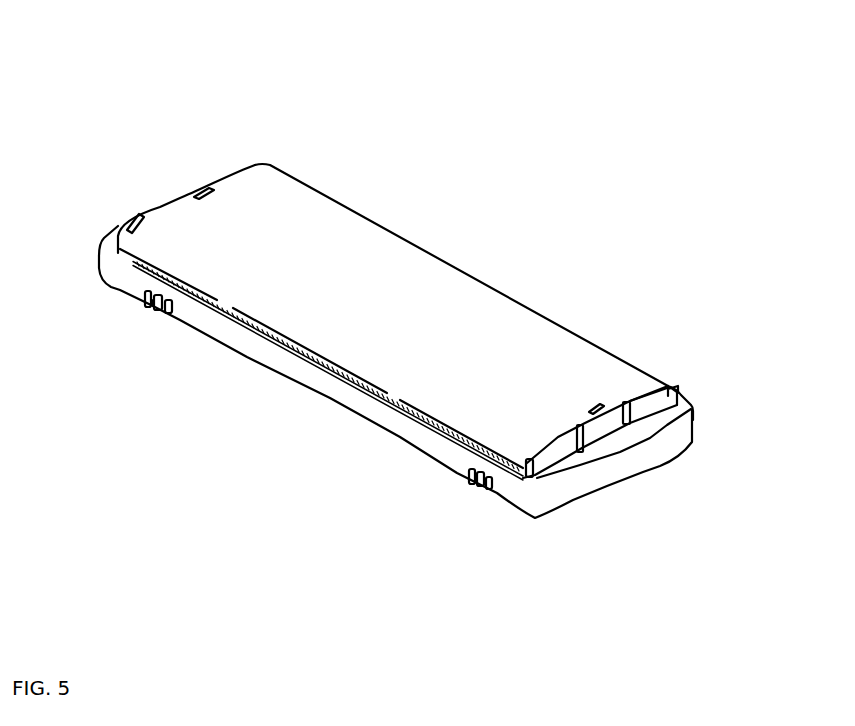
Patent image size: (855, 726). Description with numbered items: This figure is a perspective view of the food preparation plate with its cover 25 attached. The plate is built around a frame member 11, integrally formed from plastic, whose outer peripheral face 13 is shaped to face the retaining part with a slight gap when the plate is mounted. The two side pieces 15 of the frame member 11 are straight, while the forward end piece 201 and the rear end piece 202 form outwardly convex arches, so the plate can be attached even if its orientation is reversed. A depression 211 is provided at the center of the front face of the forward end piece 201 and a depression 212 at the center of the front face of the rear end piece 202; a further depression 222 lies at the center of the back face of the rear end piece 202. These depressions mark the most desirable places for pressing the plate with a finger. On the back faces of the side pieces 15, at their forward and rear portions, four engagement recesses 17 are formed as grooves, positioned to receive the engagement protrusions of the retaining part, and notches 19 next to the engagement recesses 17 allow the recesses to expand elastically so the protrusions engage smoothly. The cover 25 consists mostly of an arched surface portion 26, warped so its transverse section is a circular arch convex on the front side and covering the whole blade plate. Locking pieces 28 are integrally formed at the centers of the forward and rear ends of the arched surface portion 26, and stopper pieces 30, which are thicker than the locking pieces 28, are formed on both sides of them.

The frame member 11 is at (300, 390).
The outer peripheral face 13 is at (367, 410).
The side pieces 15 is at (254, 352).
The engagement recesses 17 is at (153, 307).
The notches 19 is at (150, 296).
The cover 25 is at (373, 220).
The arched surface portion 26 is at (407, 293).
The locking pieces 28 is at (647, 435).
The stopper pieces 30 is at (550, 462).
The forward end piece 201 is at (127, 222).
The rear end piece 202 is at (581, 472).
The depression 211 is at (157, 203).
The depression 212 is at (623, 455).
The depression 222 is at (622, 468).